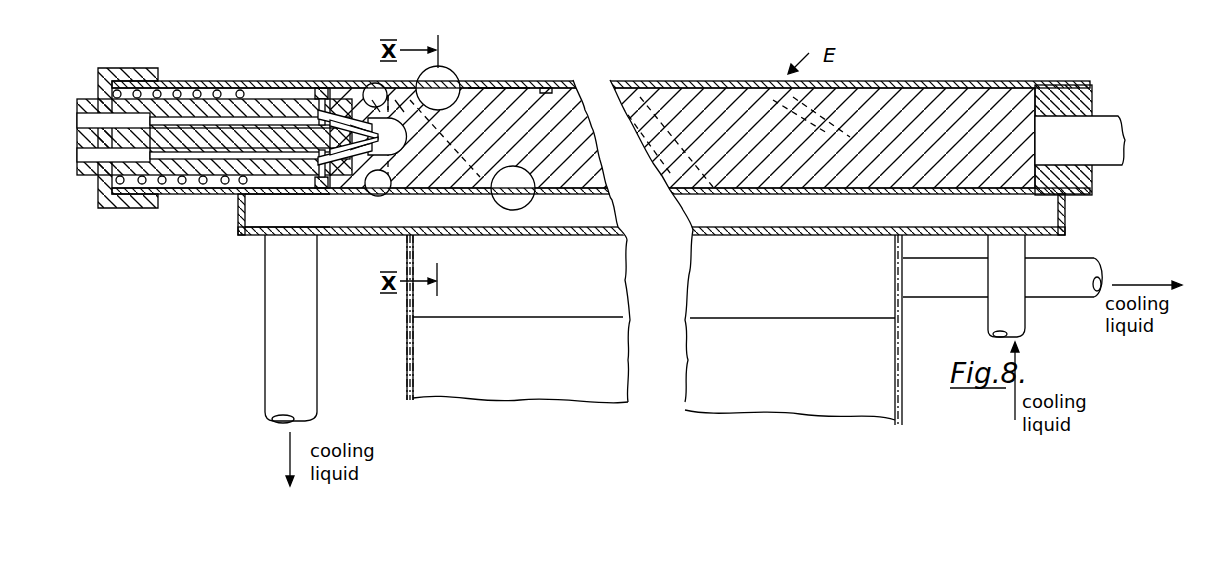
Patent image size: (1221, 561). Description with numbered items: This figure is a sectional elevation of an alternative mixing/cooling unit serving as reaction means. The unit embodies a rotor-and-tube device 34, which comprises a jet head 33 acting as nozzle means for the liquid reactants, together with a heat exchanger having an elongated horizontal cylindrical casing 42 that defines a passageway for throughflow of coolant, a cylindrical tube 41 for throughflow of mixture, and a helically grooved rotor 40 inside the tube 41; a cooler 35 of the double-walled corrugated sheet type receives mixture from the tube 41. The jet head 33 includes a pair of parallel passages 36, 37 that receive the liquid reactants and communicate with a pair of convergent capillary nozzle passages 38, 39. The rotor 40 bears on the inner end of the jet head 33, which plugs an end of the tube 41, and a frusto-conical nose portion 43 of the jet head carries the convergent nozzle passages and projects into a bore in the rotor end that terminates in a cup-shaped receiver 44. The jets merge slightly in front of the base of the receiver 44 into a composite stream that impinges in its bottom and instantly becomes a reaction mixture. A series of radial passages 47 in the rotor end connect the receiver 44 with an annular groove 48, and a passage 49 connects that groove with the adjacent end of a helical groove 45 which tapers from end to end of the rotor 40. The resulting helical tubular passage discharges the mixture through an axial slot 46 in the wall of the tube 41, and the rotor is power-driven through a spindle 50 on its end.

The jet head 33 is at (210, 140).
The rotor-and-tube device 34 is at (606, 86).
The cooler 35 is at (850, 340).
The parallel passage 36 is at (177, 122).
The parallel passage 37 is at (237, 153).
The convergent capillary nozzle passage 38 is at (320, 88).
The convergent capillary nozzle passage 39 is at (355, 145).
The helically grooved rotor 40 is at (685, 123).
The cylindrical tube 41 is at (392, 96).
The cylindrical casing 42 is at (340, 225).
The frusto-conical nose portion 43 is at (332, 117).
The cup-shaped receiver 44 is at (385, 130).
The helical groove 45 is at (478, 84).
The axial slot 46 is at (493, 83).
The radial passages 47 is at (372, 105).
The annular groove 48 is at (402, 104).
The passage 49 is at (450, 98).
The spindle 50 is at (1097, 132).